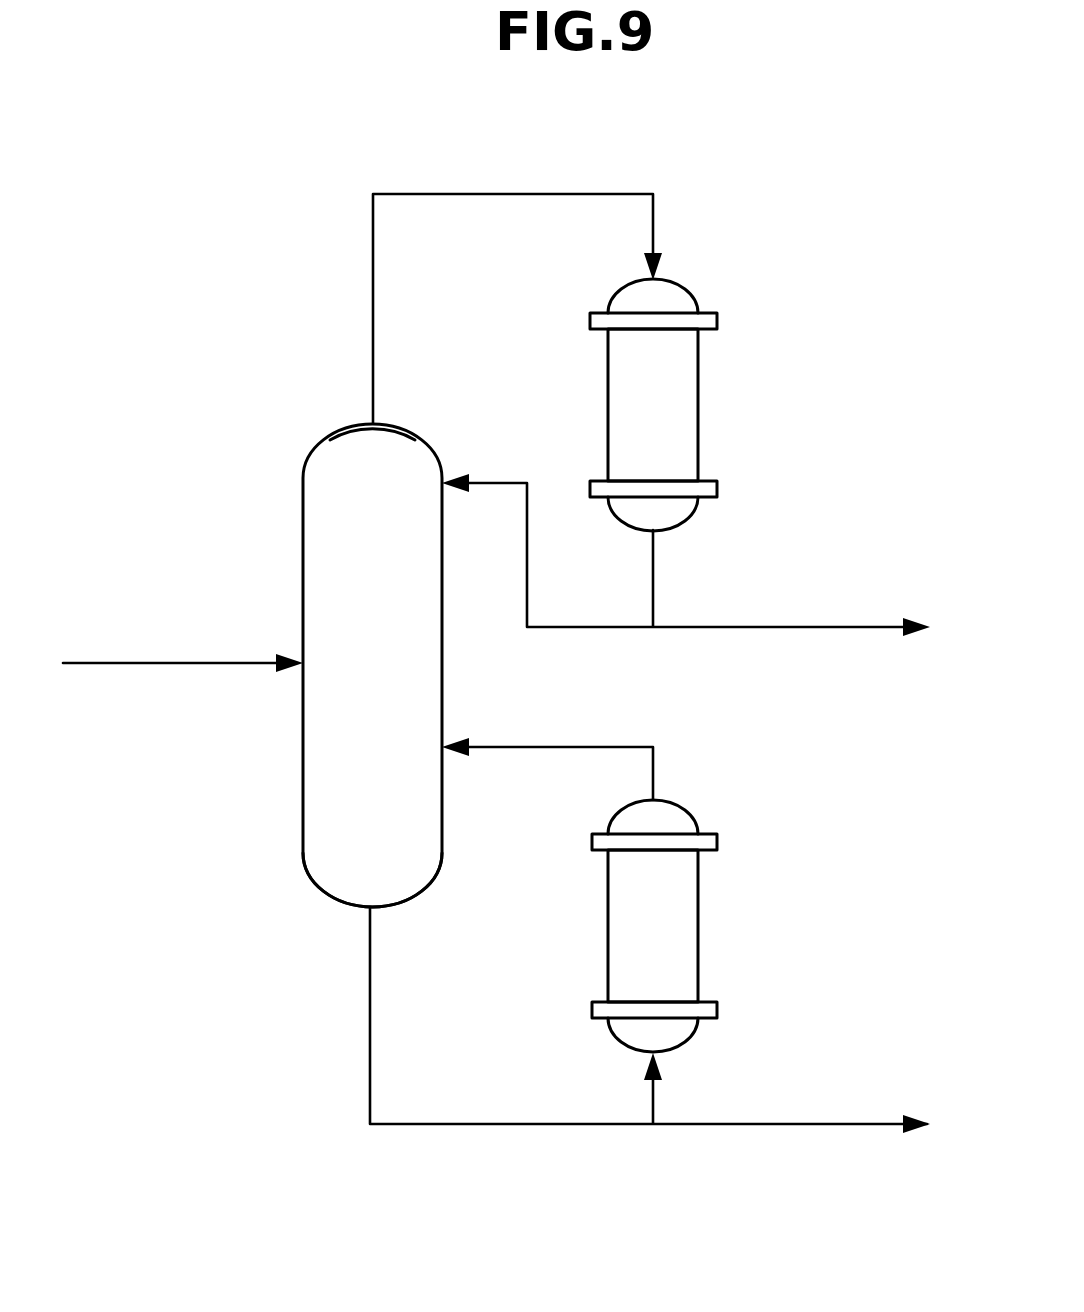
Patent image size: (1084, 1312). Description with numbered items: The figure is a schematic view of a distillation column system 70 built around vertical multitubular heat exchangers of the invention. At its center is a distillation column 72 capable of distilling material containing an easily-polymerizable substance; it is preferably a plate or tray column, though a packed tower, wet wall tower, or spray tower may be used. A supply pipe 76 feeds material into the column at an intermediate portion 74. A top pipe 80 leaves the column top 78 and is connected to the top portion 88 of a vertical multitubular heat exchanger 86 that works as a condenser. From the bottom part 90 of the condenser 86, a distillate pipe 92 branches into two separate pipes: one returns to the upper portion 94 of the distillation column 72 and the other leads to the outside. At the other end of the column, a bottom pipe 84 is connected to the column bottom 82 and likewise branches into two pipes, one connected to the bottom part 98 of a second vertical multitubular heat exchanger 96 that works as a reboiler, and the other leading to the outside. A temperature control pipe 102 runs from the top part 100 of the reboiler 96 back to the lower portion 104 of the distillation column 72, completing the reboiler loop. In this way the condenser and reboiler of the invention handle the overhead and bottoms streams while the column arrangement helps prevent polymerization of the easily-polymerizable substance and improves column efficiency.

The distillation column system 70 is at (846, 148).
The distillation column 72 is at (303, 560).
The intermediate portion 74 is at (303, 718).
The supply pipe 76 is at (157, 665).
The column top 78 is at (332, 433).
The top pipe 80 is at (505, 194).
The column bottom 82 is at (338, 903).
The bottom pipe 84 is at (500, 1126).
The vertical multitubular heat exchanger (condenser) 86 is at (698, 403).
The top portion 88 is at (692, 297).
The bottom part 90 is at (673, 530).
The distillate pipe 92 is at (653, 600).
The upper portion 94 is at (303, 472).
The vertical multitubular heat exchanger (reboiler) 96 is at (698, 922).
The bottom part 98 is at (686, 1046).
The top part 100 is at (682, 798).
The temperature control pipe 102 is at (585, 747).
The lower portion 104 is at (303, 820).